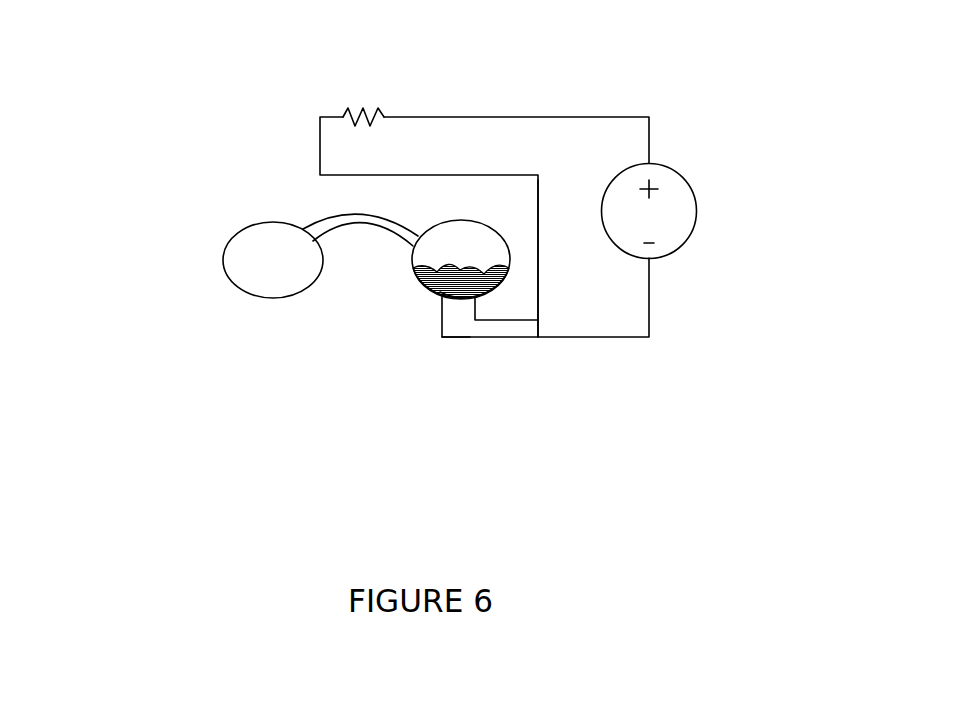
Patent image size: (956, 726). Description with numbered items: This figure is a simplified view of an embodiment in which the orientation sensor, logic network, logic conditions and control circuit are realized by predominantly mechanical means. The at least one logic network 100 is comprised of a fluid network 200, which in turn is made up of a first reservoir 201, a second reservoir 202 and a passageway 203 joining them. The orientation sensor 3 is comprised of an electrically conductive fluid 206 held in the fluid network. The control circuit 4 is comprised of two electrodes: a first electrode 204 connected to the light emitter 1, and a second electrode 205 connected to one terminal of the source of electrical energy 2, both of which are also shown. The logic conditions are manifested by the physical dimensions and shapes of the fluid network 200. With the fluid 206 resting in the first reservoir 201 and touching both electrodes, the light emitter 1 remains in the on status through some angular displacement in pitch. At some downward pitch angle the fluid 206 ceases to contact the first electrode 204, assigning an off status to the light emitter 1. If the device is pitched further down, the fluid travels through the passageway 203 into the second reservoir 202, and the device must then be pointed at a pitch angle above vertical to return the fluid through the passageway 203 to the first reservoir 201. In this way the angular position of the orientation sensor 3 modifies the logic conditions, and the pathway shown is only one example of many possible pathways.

The light emitter 1 is at (360, 90).
The source of electrical energy 2 is at (722, 216).
The orientation sensor 3 is at (438, 372).
The control circuit 4 is at (566, 292).
The logic network 100 is at (374, 251).
The fluid network 200 is at (501, 251).
The first reservoir 201 is at (436, 259).
The second reservoir 202 is at (273, 285).
The passageway 203 is at (313, 200).
The first electrode 204 is at (512, 304).
The second electrode 205 is at (460, 312).
The electrically conductive fluid 206 is at (463, 270).